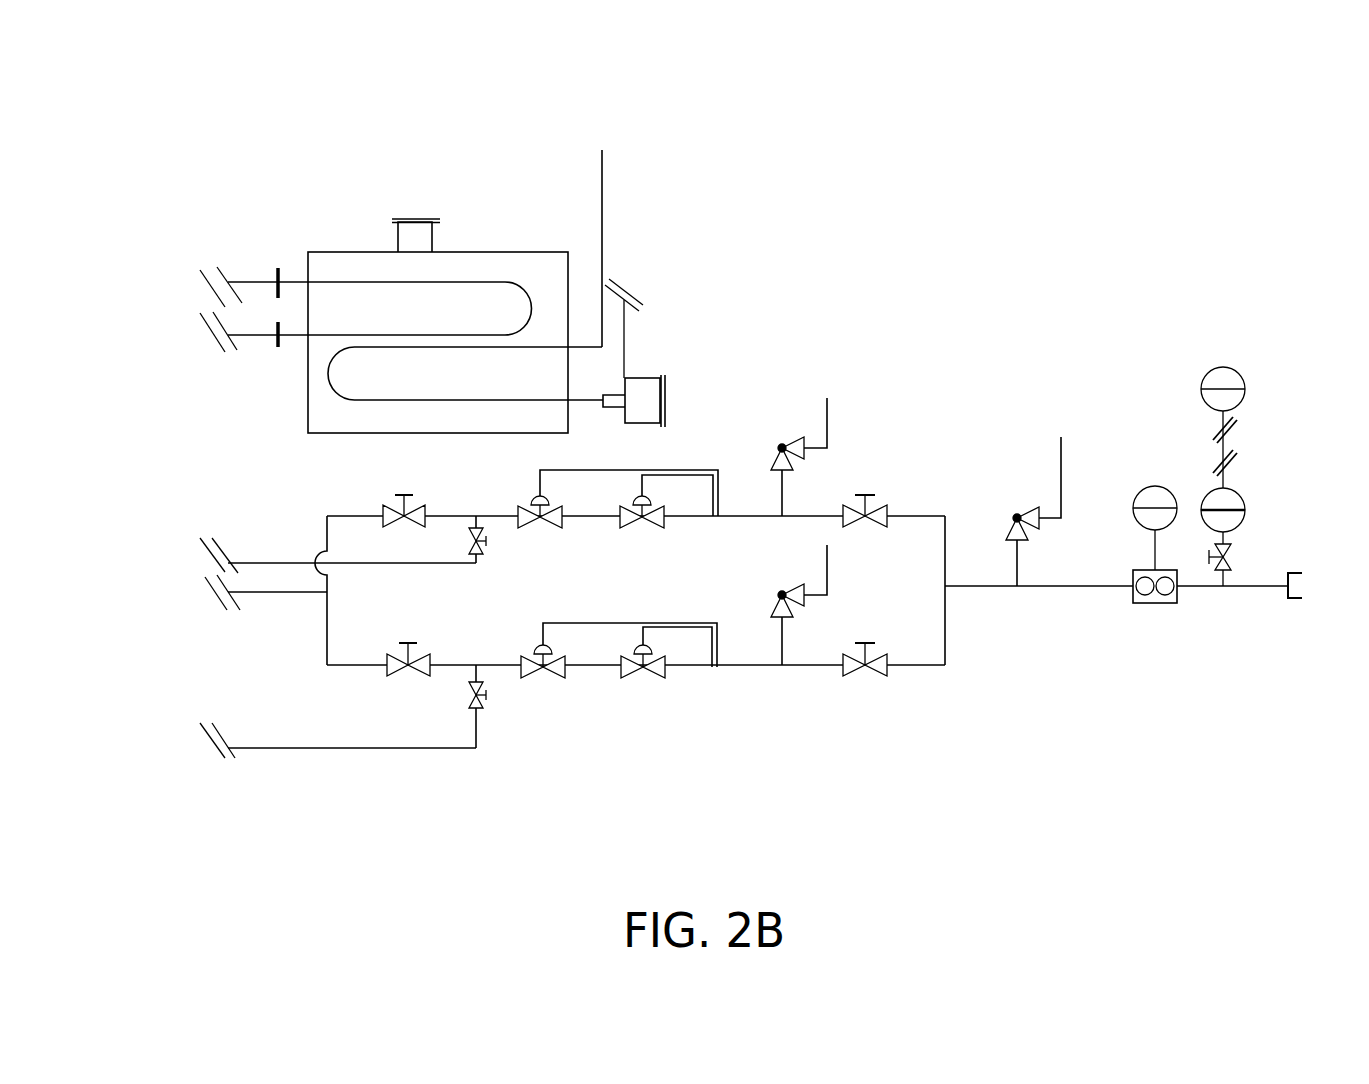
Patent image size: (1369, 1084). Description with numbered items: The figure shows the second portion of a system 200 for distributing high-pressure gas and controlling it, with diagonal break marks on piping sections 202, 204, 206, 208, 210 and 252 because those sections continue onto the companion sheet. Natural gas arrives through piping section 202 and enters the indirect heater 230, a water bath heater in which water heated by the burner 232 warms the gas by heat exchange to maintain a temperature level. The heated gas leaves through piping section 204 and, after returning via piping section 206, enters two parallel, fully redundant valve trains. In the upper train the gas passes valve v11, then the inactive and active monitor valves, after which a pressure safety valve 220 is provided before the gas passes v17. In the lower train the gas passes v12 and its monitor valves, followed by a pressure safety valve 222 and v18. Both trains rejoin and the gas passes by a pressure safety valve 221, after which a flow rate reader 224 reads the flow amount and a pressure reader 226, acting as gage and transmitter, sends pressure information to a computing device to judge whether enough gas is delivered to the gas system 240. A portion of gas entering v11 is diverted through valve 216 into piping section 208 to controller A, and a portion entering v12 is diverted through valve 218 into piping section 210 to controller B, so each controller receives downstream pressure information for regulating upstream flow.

The system 200 is at (265, 836).
The piping section 202 is at (188, 255).
The piping section 204 is at (197, 334).
The piping section 206 is at (196, 609).
The piping section 208 is at (183, 535).
The piping section 210 is at (196, 745).
The valve 216 is at (483, 553).
The valve 218 is at (496, 712).
The pressure safety valve 220 is at (786, 430).
The pressure safety valve 221 is at (1035, 445).
The pressure safety valve 222 is at (790, 683).
The flow rate reader 224 is at (1145, 612).
The pressure reader 226 is at (1180, 363).
The indirect heater 230 is at (485, 232).
The burner 232 is at (672, 387).
The gas system 240 is at (1297, 567).
The piping section 252 is at (640, 283).